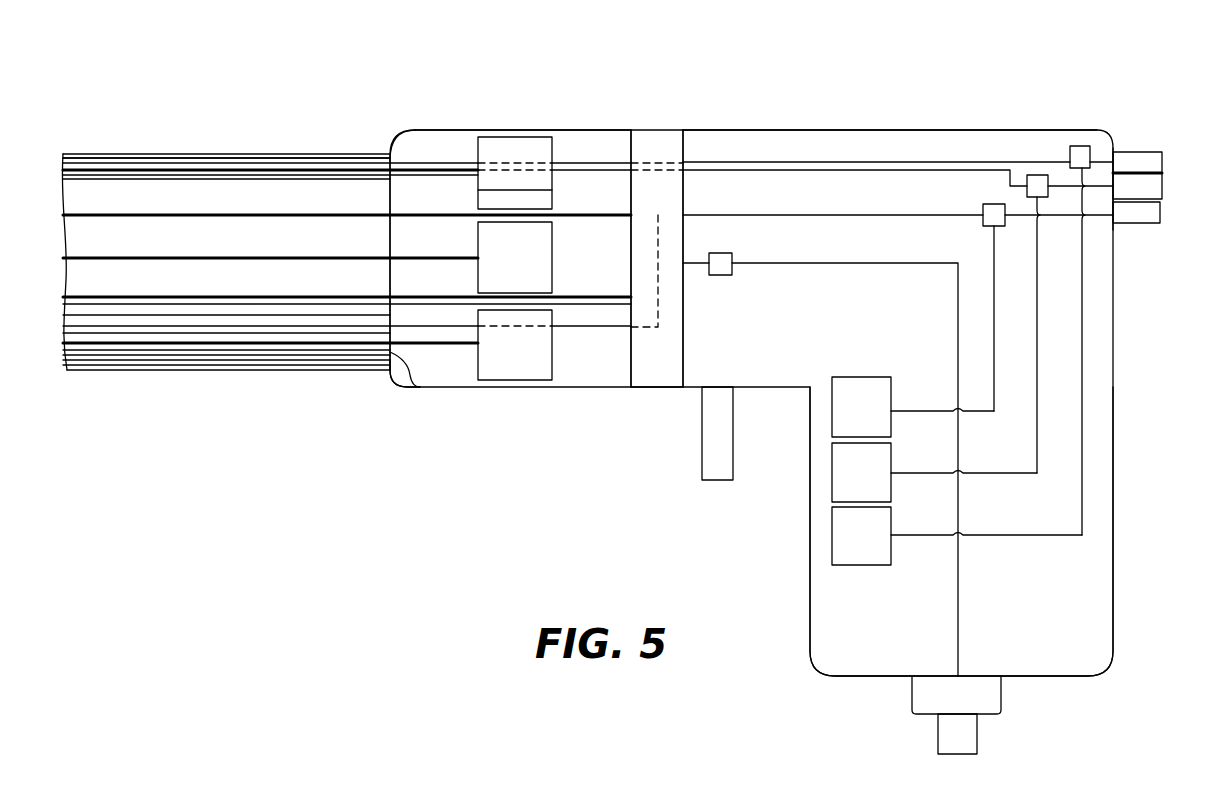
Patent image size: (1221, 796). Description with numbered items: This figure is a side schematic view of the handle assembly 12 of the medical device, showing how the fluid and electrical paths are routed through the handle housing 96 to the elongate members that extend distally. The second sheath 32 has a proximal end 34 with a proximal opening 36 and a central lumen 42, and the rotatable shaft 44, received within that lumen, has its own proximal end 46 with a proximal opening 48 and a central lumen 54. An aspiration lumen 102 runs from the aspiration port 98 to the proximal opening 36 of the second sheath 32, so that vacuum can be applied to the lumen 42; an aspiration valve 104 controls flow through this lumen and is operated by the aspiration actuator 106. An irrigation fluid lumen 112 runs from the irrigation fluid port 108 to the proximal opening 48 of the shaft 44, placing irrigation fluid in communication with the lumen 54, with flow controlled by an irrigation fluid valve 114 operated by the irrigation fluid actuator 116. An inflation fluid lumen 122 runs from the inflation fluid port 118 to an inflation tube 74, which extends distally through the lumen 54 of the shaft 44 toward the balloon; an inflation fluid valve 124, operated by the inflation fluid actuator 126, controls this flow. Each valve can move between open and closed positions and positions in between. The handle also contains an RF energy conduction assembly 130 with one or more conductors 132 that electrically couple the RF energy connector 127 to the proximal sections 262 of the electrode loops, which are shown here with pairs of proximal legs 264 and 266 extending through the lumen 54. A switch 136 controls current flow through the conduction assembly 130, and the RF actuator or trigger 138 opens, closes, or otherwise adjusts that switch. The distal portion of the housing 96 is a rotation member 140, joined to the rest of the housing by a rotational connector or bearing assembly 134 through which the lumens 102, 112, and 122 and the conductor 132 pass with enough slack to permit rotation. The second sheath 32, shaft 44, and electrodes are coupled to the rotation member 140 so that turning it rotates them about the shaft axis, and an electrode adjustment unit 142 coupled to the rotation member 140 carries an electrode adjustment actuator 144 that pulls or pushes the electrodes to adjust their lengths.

The handle assembly 12 is at (887, 104).
The second sheath 32 is at (168, 152).
The proximal end 34 is at (388, 150).
The proximal opening 36 is at (388, 368).
The central lumen 42 is at (343, 358).
The rotatable shaft 44 is at (243, 155).
The proximal end 46 is at (390, 352).
The proximal opening 48 is at (390, 315).
The central lumen 54 is at (238, 313).
The inflation tube 74 is at (168, 330).
The handle housing 96 is at (988, 130).
The aspiration port 98 is at (1117, 150).
The aspiration lumen 102 is at (782, 162).
The aspiration valve 104 is at (1078, 146).
The aspiration actuator 106 is at (957, 536).
The irrigation fluid port 108 is at (1132, 175).
The irrigation fluid lumen 112 is at (817, 170).
The irrigation fluid valve 114 is at (1036, 175).
The irrigation fluid actuator 116 is at (934, 472).
The inflation fluid port 118 is at (1137, 223).
The inflation fluid lumen 122 is at (1093, 217).
The inflation fluid valve 124 is at (983, 225).
The inflation fluid actuator 126 is at (913, 407).
The RF energy connector 127 is at (970, 738).
The RF energy conduction assembly 130 is at (973, 603).
The conductor 132 is at (827, 263).
The rotational connector 134 is at (663, 380).
The switch 136 is at (727, 253).
The RF actuator 138 is at (718, 475).
The rotation member 140 is at (587, 146).
The electrode adjustment unit 142 is at (500, 134).
The electrode adjustment actuator 144 is at (540, 194).
The proximal sections 262 is at (136, 171).
The proximal leg 264 is at (333, 155).
The proximal leg 266 is at (222, 215).